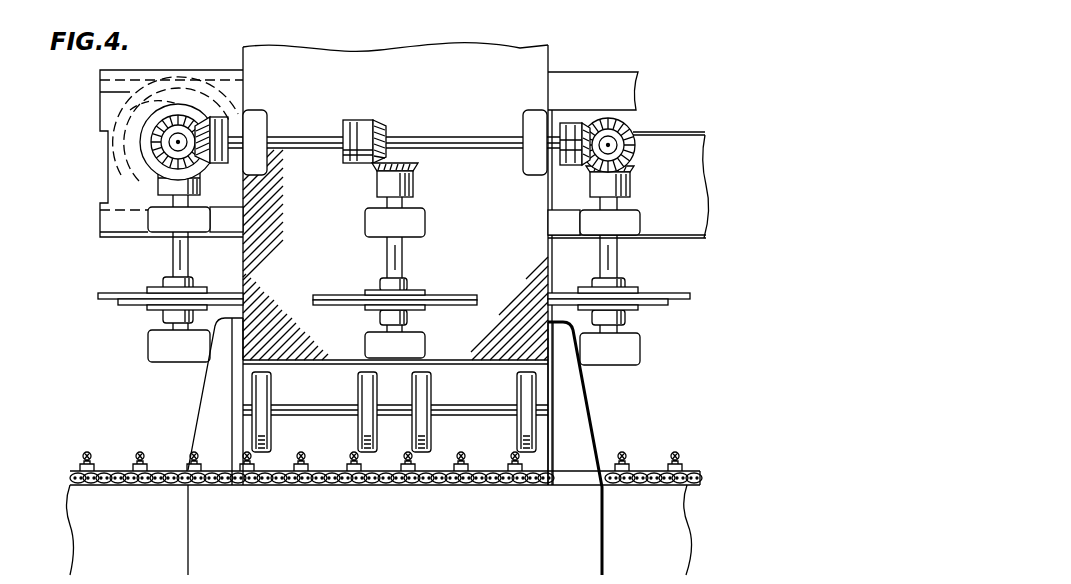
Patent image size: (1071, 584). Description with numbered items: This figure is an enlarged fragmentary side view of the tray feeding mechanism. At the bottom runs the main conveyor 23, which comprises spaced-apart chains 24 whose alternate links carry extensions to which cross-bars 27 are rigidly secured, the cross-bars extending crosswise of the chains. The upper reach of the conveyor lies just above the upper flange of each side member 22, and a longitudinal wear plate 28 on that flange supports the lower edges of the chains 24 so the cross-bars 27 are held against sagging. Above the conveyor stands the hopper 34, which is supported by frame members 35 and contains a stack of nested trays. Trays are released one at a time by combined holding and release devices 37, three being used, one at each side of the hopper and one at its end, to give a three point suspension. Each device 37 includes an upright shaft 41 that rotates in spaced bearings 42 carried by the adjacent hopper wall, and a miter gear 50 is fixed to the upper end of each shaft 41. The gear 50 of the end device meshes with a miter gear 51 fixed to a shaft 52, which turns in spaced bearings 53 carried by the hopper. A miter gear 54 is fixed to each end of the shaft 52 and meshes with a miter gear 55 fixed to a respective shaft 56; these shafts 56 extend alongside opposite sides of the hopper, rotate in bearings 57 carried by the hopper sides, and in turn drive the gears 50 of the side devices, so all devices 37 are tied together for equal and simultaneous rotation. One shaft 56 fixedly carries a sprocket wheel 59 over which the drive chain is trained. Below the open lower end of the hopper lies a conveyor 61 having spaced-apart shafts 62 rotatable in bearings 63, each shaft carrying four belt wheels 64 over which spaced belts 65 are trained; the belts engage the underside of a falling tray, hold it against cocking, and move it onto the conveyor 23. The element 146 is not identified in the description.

The motor housing 146 is at (100, 75).
The sprocket wheel 59 is at (150, 98).
The miter gear 55 is at (180, 128).
The shaft 56 is at (158, 167).
The miter gear 54 is at (222, 130).
The bearing 53 is at (258, 134).
The miter gear 51 is at (354, 127).
The shaft 52 is at (442, 143).
The hopper 34 is at (538, 62).
The miter gear 50 is at (177, 144).
The bearing 57 is at (225, 222).
The bearing 42 is at (160, 218).
The upright shaft 41 is at (182, 262).
The combined holding and release device 37 is at (137, 306).
The bearing 63 is at (242, 378).
The frame member 35 is at (215, 410).
The shaft 62 is at (303, 405).
The belt wheel 64 is at (358, 432).
The belt 65 is at (523, 385).
The conveyor 61 is at (537, 393).
The cross-bar 27 is at (140, 456).
The conveyor 23 is at (352, 488).
The wear plate 28 is at (437, 487).
The chain 24 is at (142, 485).
The side member 22 is at (672, 541).